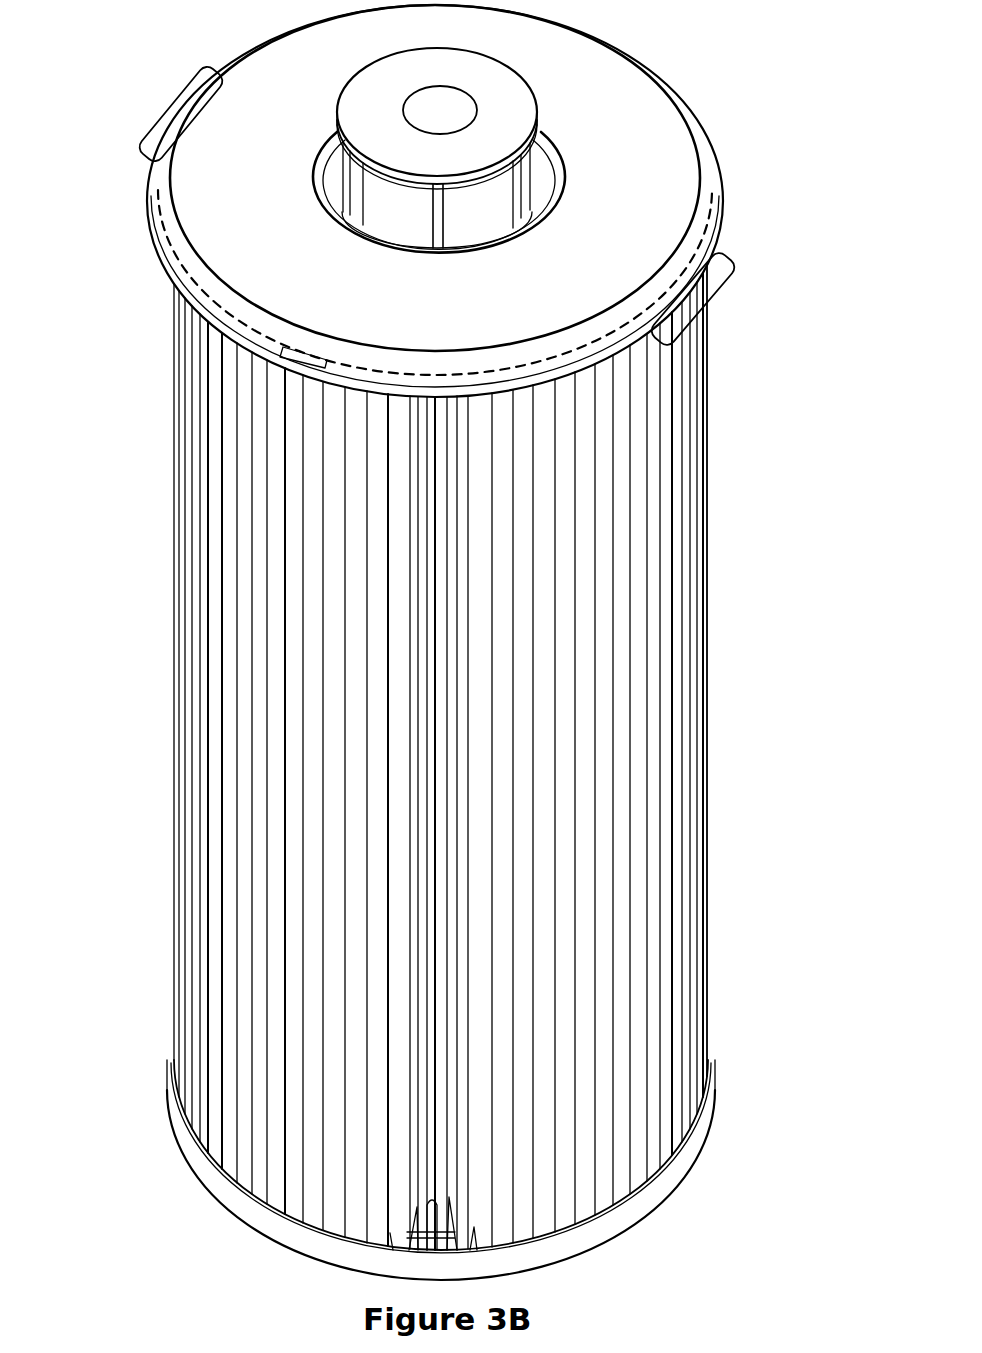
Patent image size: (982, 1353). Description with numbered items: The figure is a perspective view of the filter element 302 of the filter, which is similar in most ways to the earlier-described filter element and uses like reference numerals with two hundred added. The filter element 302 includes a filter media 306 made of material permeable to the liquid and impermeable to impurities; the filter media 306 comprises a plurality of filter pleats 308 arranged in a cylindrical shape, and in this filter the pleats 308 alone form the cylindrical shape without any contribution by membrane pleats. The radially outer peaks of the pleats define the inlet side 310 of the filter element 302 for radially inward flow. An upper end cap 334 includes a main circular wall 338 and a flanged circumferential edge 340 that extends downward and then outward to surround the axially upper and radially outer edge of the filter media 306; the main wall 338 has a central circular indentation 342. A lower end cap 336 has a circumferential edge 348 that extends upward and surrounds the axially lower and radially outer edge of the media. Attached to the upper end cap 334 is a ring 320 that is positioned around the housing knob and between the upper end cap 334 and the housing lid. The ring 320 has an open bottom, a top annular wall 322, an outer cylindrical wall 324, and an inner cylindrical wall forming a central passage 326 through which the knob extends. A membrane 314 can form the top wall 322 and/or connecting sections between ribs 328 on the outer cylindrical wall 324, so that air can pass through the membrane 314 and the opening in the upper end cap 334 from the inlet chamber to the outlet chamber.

The filter element 302 is at (760, 502).
The filter media 306 is at (645, 586).
The filter pleats 308 is at (638, 833).
The inlet side 310 is at (707, 427).
The membrane 314 is at (513, 100).
The ring 320 is at (355, 206).
The top annular wall 322 is at (513, 100).
The outer cylindrical wall 324 is at (493, 200).
The central passage 326 is at (432, 107).
The ribs 328 is at (440, 220).
The upper end cap 334 is at (657, 233).
The lower end cap 336 is at (660, 1220).
The main circular wall 338 is at (643, 135).
The flanged circumferential edge 340 is at (663, 283).
The central circular indentation 342 is at (337, 175).
The circumferential edge 348 is at (587, 1235).